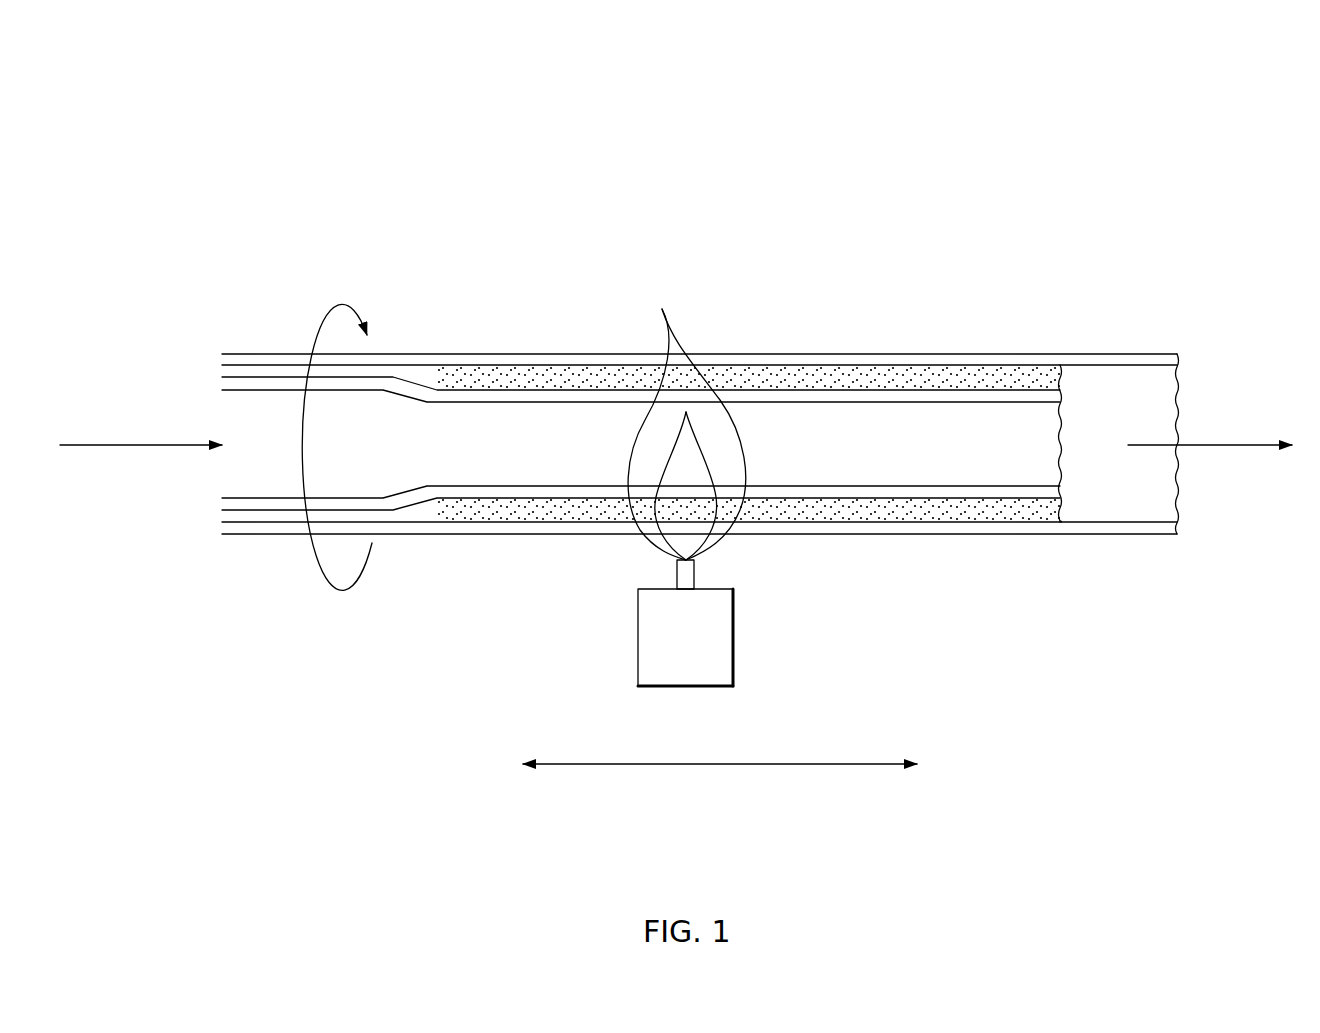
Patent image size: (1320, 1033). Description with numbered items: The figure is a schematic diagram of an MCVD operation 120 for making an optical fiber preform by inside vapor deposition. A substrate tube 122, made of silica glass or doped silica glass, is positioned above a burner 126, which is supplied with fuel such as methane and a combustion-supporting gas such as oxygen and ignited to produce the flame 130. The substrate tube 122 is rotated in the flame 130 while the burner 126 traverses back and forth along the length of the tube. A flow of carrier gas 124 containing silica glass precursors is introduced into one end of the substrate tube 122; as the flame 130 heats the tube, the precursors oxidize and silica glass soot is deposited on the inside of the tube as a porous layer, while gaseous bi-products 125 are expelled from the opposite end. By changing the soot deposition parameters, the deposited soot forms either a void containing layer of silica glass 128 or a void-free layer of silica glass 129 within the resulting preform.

The MCVD operation 120 is at (473, 158).
The substrate tube 122 is at (457, 352).
The flow of carrier gas 124 is at (122, 445).
The gaseous bi-products 125 is at (1253, 445).
The burner 126 is at (734, 643).
The void containing layer of silica glass 128 is at (857, 378).
The void-free layer of silica glass 129 is at (467, 486).
The flame 130 is at (683, 327).